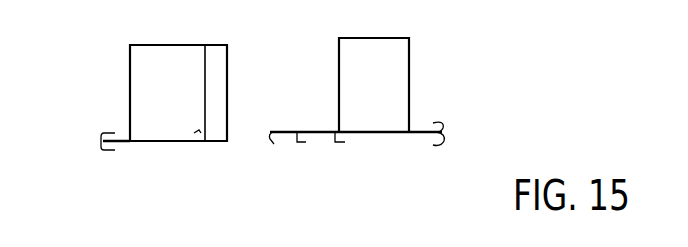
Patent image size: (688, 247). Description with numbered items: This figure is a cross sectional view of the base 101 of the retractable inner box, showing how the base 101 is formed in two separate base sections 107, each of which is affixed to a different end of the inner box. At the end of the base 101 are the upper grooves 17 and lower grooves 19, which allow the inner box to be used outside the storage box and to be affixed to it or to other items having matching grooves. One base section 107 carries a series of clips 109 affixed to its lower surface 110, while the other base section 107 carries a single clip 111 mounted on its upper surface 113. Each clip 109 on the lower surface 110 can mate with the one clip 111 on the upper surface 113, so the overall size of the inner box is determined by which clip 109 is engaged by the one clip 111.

The base 101 is at (159, 140).
The upper surface 113 is at (127, 138).
The upper grooves 17 is at (100, 131).
The lower grooves 19 is at (105, 152).
The clip 111 is at (197, 131).
The base section 107 is at (376, 134).
The clips 109 is at (275, 140).
The lower surface 110 is at (423, 135).